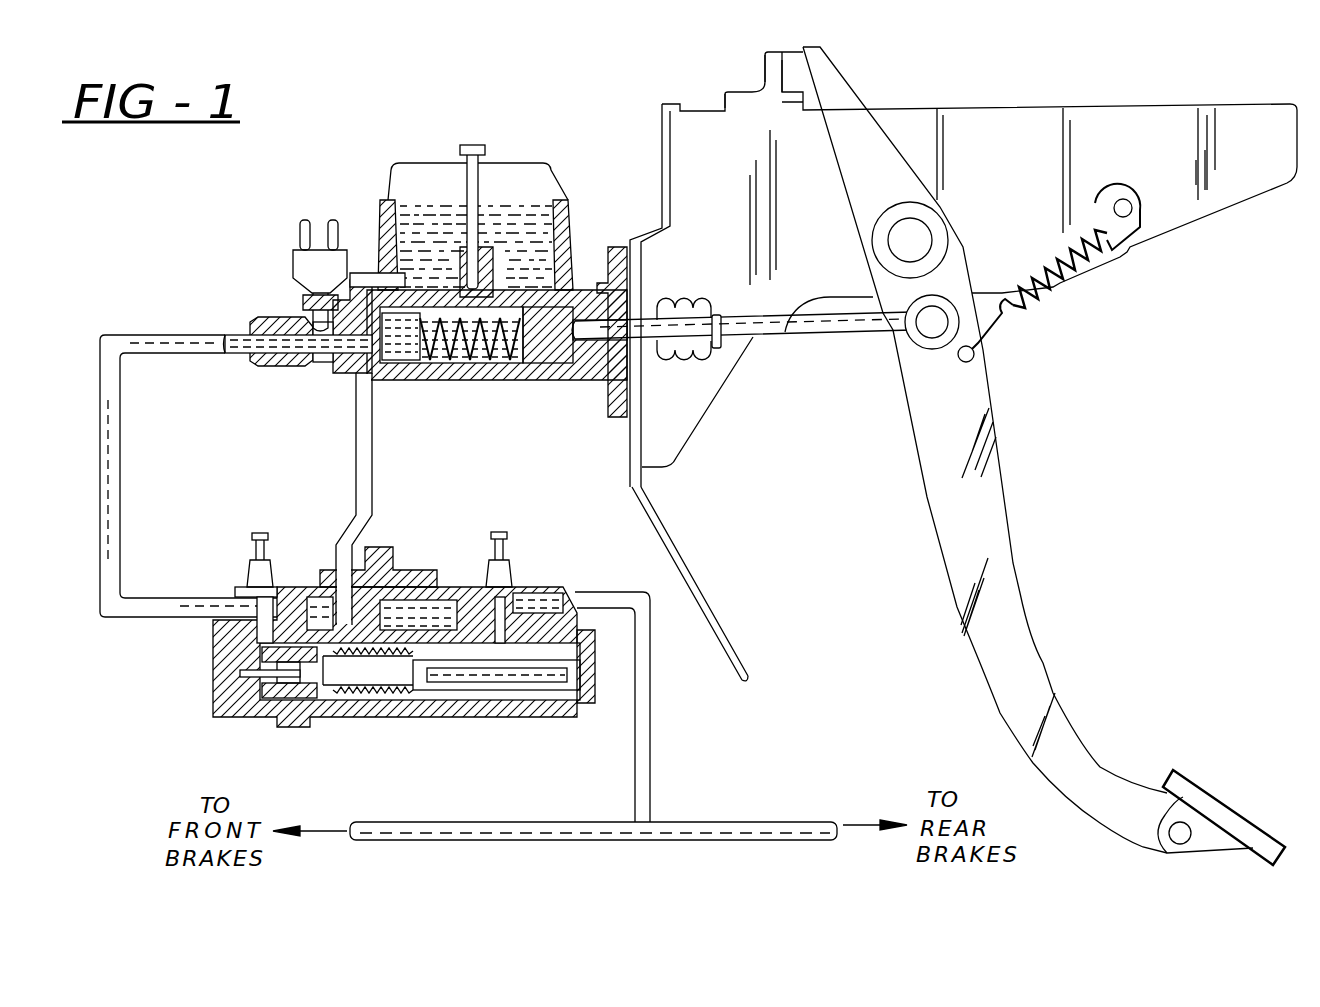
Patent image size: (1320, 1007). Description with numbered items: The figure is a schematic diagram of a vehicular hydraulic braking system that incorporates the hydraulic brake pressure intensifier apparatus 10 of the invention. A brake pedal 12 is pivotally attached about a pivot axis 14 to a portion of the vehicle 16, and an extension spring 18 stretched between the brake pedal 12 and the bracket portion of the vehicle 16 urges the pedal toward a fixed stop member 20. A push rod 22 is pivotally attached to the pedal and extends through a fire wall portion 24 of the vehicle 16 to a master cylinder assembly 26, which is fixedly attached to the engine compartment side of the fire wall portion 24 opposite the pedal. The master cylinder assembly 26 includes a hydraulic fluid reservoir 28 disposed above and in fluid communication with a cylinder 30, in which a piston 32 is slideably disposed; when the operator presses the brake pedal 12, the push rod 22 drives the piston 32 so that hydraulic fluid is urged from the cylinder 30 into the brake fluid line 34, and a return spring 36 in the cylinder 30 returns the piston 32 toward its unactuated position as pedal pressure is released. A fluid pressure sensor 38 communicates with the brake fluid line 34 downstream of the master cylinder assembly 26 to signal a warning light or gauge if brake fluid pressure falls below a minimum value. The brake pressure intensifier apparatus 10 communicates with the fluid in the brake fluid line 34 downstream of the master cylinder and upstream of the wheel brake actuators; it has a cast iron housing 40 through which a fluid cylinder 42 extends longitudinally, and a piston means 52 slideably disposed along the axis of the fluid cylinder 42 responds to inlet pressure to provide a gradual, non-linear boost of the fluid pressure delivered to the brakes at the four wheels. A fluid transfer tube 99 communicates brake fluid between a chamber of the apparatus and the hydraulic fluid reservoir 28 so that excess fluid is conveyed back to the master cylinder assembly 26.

The hydraulic brake pressure intensifier apparatus 10 is at (629, 415).
The brake pedal 12 is at (1193, 783).
The pivot axis 14 is at (917, 238).
The vehicle 16 is at (1148, 104).
The extension spring 18 is at (1068, 285).
The fixed stop member 20 is at (792, 53).
The push rod 22 is at (823, 323).
The fire wall portion 24 is at (627, 480).
The master cylinder assembly 26 is at (629, 415).
The hydraulic fluid reservoir 28 is at (540, 245).
The cylinder 30 is at (443, 360).
The piston 32 is at (532, 360).
The brake fluid line 34 is at (183, 338).
The return spring 36 is at (480, 357).
The fluid pressure sensor 38 is at (293, 262).
The housing 40 is at (629, 457).
The fluid cylinder 42 is at (480, 687).
The piston means 52 is at (343, 720).
The fluid transfer tube 99 is at (363, 463).